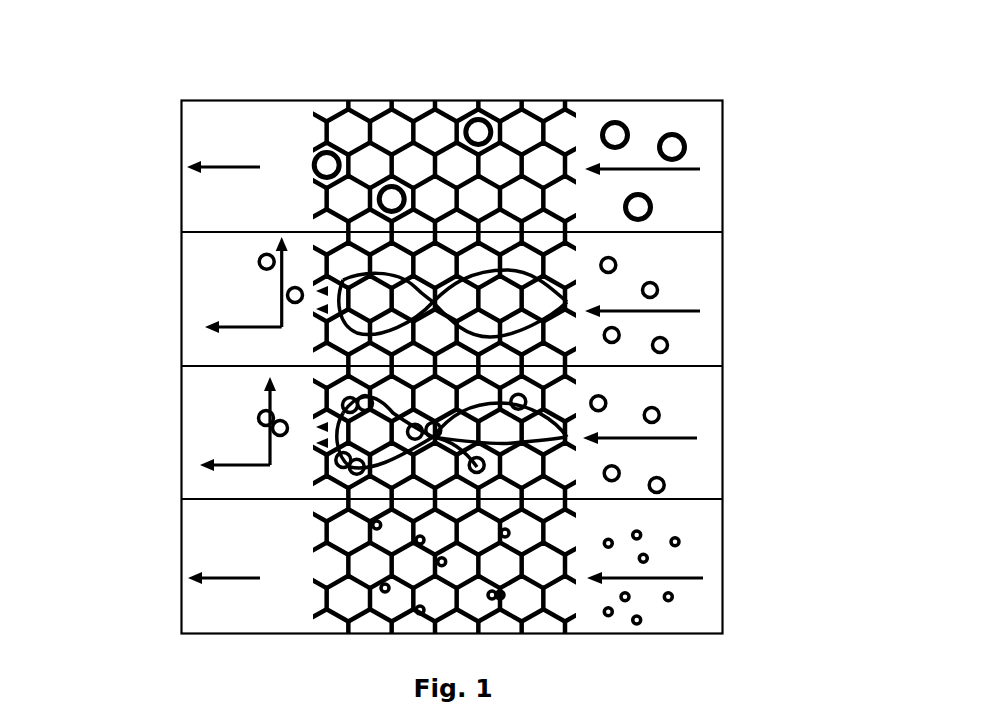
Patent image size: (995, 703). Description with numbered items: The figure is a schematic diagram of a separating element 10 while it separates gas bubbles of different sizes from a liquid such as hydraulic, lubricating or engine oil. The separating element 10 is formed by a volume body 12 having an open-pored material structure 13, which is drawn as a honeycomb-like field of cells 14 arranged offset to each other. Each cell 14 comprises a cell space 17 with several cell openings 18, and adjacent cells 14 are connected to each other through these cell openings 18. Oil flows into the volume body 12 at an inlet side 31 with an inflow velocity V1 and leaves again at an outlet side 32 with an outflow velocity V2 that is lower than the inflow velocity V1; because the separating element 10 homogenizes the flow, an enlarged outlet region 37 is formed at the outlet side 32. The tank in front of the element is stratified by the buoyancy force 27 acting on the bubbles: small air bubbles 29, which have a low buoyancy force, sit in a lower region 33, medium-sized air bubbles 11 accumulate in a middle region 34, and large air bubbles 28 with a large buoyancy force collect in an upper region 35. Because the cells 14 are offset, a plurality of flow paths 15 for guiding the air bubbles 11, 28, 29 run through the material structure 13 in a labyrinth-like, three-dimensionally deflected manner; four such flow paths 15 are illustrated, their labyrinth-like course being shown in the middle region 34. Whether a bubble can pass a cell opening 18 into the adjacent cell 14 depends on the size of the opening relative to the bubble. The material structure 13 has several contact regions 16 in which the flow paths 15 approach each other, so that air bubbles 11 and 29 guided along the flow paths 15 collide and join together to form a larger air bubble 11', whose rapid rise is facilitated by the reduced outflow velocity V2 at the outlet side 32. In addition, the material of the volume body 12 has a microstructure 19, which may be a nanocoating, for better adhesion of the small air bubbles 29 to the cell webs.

The separating element 10 is at (336, 78).
The medium-sized air bubbles 11 is at (449, 365).
The enlarged air bubble 11' is at (161, 440).
The volume body 12 is at (498, 162).
The open-pored material structure 13 is at (414, 160).
The cells 14 is at (507, 113).
The flow paths 15 is at (545, 455).
The contact regions 16 is at (313, 248).
The cell space 17 is at (330, 556).
The cell openings 18 is at (421, 545).
The microstructure 19 is at (500, 600).
The buoyancy force 27 is at (275, 308).
The large air bubbles 28 is at (620, 122).
The small air bubbles 29 is at (675, 542).
The inlet side 31 is at (750, 137).
The outlet side 32 is at (156, 131).
The lower region 33 is at (713, 517).
The middle region 34 is at (572, 302).
The upper region 35 is at (708, 220).
The outlet region 37 is at (156, 131).
The inflow velocity V1 is at (637, 620).
The outflow velocity V2 is at (213, 170).